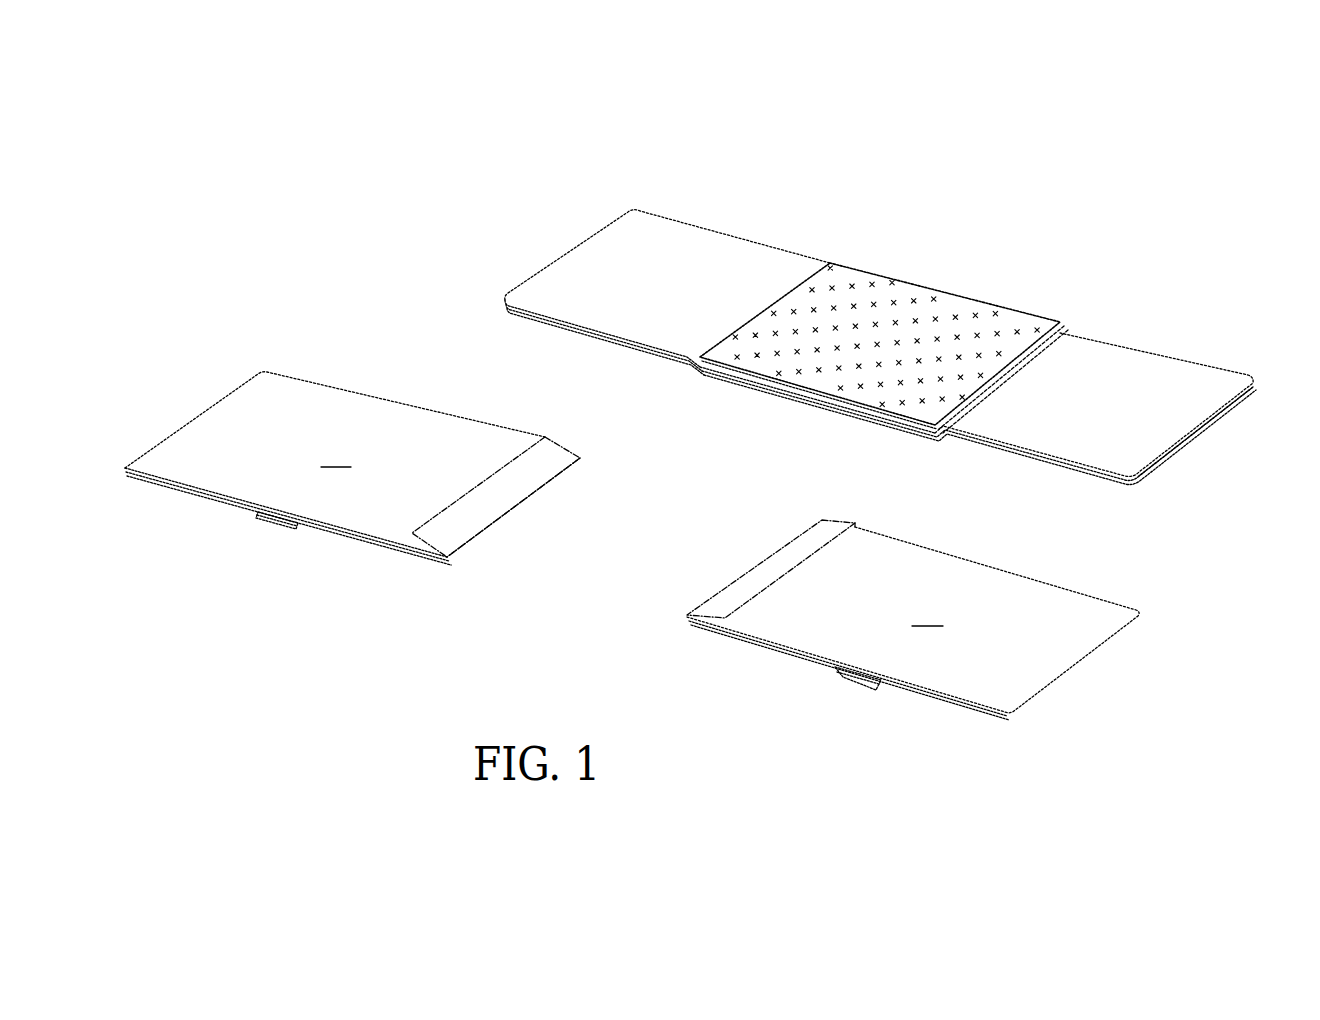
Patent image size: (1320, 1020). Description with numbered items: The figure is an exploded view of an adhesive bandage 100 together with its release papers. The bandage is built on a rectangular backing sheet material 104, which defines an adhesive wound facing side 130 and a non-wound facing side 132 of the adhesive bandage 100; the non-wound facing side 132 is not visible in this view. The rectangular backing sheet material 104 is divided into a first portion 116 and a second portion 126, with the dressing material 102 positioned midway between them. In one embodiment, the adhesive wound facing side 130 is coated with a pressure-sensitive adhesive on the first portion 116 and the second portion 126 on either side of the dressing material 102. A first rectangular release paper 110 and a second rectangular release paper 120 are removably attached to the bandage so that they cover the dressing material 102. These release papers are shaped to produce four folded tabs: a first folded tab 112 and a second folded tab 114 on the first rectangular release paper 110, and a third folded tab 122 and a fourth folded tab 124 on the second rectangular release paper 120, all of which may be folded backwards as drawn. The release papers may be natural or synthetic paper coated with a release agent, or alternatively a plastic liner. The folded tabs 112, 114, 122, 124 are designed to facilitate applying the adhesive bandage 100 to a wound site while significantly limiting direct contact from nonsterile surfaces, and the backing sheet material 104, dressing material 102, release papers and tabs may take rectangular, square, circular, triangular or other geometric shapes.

The adhesive bandage 100 is at (317, 143).
The dressing material 102 is at (770, 382).
The rectangular backing sheet material 104 is at (562, 253).
The first rectangular release paper 110 is at (391, 502).
The first folded tab 112 is at (563, 448).
The second folded tab 114 is at (280, 528).
The first portion 116 is at (952, 267).
The second rectangular release paper 120 is at (913, 615).
The third folded tab 122 is at (833, 520).
The fourth folded tab 124 is at (852, 690).
The second portion 126 is at (1277, 353).
The adhesive wound facing side 130 is at (867, 366).
The non-wound facing side 132 is at (1184, 472).